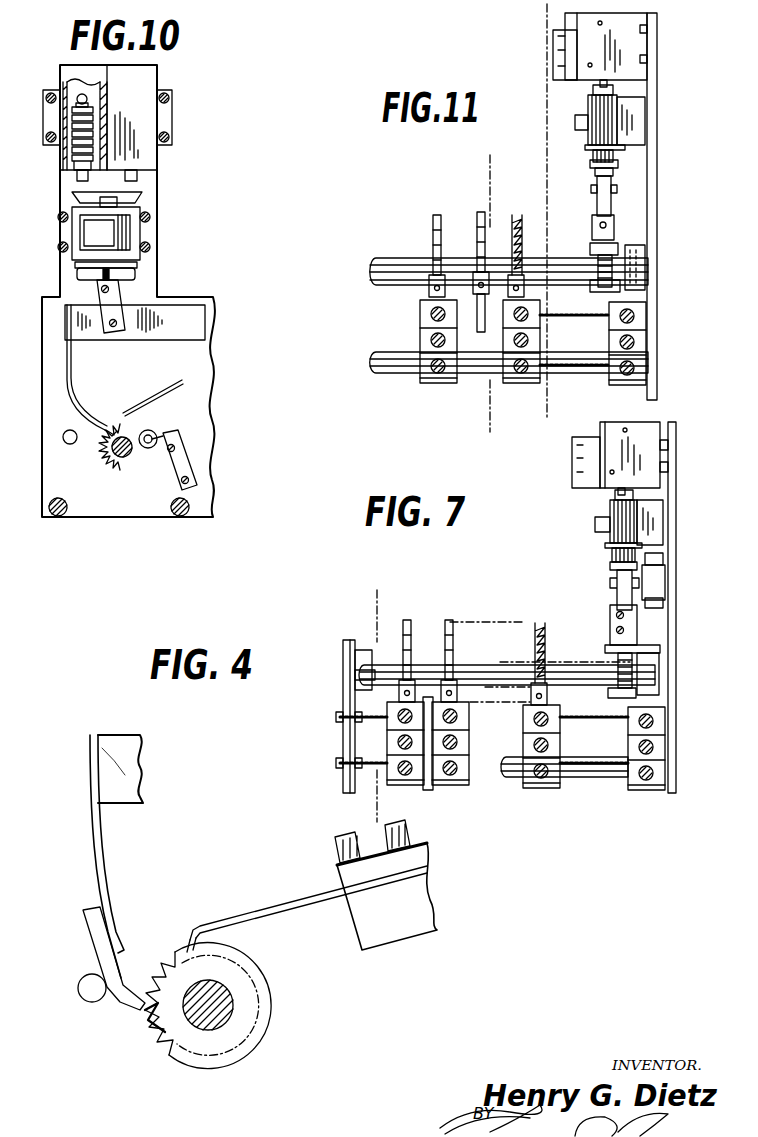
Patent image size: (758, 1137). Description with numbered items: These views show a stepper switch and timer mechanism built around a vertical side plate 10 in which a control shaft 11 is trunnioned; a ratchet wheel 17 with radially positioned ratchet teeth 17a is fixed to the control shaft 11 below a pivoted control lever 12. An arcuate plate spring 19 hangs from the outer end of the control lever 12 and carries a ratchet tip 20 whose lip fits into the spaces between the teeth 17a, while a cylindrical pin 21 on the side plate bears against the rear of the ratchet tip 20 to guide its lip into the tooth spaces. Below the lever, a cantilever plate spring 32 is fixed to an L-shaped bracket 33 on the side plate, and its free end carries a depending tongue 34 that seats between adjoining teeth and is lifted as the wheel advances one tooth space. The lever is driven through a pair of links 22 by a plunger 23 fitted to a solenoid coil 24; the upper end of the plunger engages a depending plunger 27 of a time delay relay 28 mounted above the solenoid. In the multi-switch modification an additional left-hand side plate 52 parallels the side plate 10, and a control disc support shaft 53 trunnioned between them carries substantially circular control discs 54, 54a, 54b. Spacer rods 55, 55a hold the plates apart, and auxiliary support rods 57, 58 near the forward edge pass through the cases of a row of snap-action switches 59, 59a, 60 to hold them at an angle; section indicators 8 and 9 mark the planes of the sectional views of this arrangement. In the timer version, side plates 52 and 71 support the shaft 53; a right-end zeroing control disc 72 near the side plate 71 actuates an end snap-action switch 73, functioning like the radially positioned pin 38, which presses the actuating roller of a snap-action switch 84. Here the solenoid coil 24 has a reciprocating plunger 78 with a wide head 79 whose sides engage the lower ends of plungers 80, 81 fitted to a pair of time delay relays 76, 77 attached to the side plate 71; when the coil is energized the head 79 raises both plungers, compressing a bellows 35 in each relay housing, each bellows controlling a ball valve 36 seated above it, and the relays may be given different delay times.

In FIG. 7, the section line 8- 8 is at (375, 612).
In FIG. 11, the section line 9- 9 is at (488, 173).
In FIG. 11, the side plate 10 is at (545, 17).
In FIG. 7, the side plate 10 is at (676, 566).
In FIG. 4, the control shaft 11 is at (233, 1013).
In FIG. 10, the control lever 12 is at (142, 334).
In FIG. 11, the control lever 12 is at (611, 203).
In FIG. 4, the control lever 12 is at (140, 772).
In FIG. 10, the ratchet wheel 17 is at (112, 462).
In FIG. 4, the ratchet wheel 17 is at (191, 1046).
In FIG. 4, the ratchet teeth 17a is at (153, 1032).
In FIG. 10, the plate spring 19 is at (67, 376).
In FIG. 4, the plate spring 19 is at (104, 838).
In FIG. 10, the ratchet tip 20 is at (103, 428).
In FIG. 4, the ratchet tip 20 is at (127, 985).
In FIG. 10, the cylindrical pin 21 is at (69, 445).
In FIG. 4, the cylindrical pin 21 is at (80, 1000).
In FIG. 11, the links 22 is at (597, 196).
In FIG. 7, the plunger 23 is at (610, 560).
In FIG. 10, the solenoid coil 24 is at (130, 234).
In FIG. 11, the solenoid coil 24 is at (583, 134).
In FIG. 7, the solenoid coil 24 is at (605, 545).
In FIG. 7, the depending plunger 27 is at (618, 492).
In FIG. 7, the time delay relay 28 is at (660, 422).
In FIG. 10, the cantilever plate spring 32 is at (180, 387).
In FIG. 4, the cantilever plate spring 32 is at (265, 888).
In FIG. 4, the L-shaped bracket 33 is at (390, 940).
In FIG. 10, the tongue 34 is at (125, 422).
In FIG. 4, the tongue 34 is at (188, 938).
In FIG. 10, the bellows 35 is at (72, 157).
In FIG. 10, the ball valve 36 is at (88, 99).
In FIG. 10, the radially positioned pin 38 is at (150, 448).
In FIG. 7, the left-hand side plate 52 is at (343, 743).
In FIG. 10, the control disc support shaft 53 is at (131, 460).
In FIG. 11, the control disc support shaft 53 is at (372, 282).
In FIG. 7, the control disc support shaft 53 is at (463, 668).
In FIG. 11, the control disc 54 is at (437, 215).
In FIG. 7, the control disc 54 is at (407, 620).
In FIG. 11, the control disc 54a is at (481, 212).
In FIG. 7, the control disc 54a is at (449, 620).
In FIG. 7, the control disc 54b is at (540, 623).
In FIG. 10, the spacer rod 55 is at (180, 516).
In FIG. 7, the spacer rod 55 is at (532, 787).
In FIG. 10, the spacer rod 55a is at (58, 516).
In FIG. 11, the auxiliary support rod 57 is at (566, 376).
In FIG. 7, the auxiliary support rod 57 is at (372, 760).
In FIG. 11, the auxiliary support rod 58 is at (600, 328).
In FIG. 7, the auxiliary support rod 58 is at (590, 722).
In FIG. 11, the snap-action switch 59 is at (425, 383).
In FIG. 7, the snap-action switch 59 is at (405, 786).
In FIG. 7, the snap-action switch 59a is at (455, 786).
In FIG. 7, the snap-action switch 60 is at (555, 787).
In FIG. 10, the right-hand side plate 71 is at (157, 285).
In FIG. 11, the right-hand side plate 71 is at (657, 186).
In FIG. 11, the zeroing control disc 72 is at (520, 215).
In FIG. 11, the snap-action switch 73 is at (548, 383).
In FIG. 10, the time delay relay 76 is at (43, 116).
In FIG. 10, the time delay relay 77 is at (157, 88).
In FIG. 11, the time delay relay 77 is at (645, 15).
In FIG. 10, the solenoid plunger 78 is at (95, 266).
In FIG. 11, the solenoid plunger 78 is at (590, 162).
In FIG. 10, the wide head 79 is at (142, 200).
In FIG. 10, the plunger 80 is at (77, 178).
In FIG. 10, the plunger 81 is at (137, 176).
In FIG. 11, the plunger 81 is at (600, 84).
In FIG. 10, the snap-action switch 84 is at (197, 468).
In FIG. 11, the snap-action switch 84 is at (643, 342).